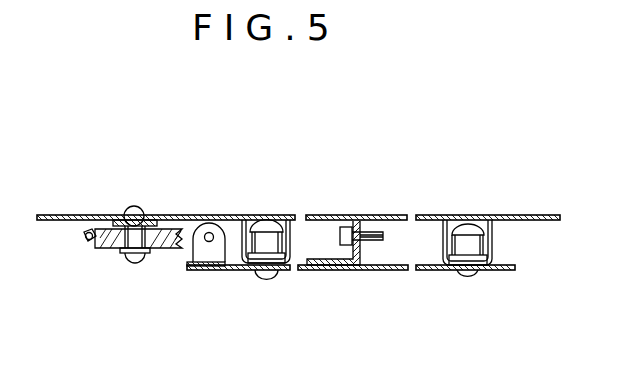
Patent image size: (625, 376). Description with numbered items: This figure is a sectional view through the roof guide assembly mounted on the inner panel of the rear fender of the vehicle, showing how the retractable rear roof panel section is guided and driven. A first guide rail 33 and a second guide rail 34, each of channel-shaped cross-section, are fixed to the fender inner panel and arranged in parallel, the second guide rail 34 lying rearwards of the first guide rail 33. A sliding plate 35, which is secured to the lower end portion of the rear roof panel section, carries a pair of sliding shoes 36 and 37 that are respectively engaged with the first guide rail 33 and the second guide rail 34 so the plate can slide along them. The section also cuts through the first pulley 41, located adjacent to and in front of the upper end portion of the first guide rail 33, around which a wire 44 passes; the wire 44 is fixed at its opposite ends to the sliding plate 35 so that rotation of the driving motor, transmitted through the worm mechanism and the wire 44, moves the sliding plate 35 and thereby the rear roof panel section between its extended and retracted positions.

The first guide rail 33 is at (290, 238).
The second guide rail 34 is at (492, 238).
The sliding plate 35 is at (367, 270).
The sliding shoe 36 is at (250, 263).
The sliding shoe 37 is at (478, 250).
The first pulley 41 is at (108, 249).
The wire 44 is at (84, 234).